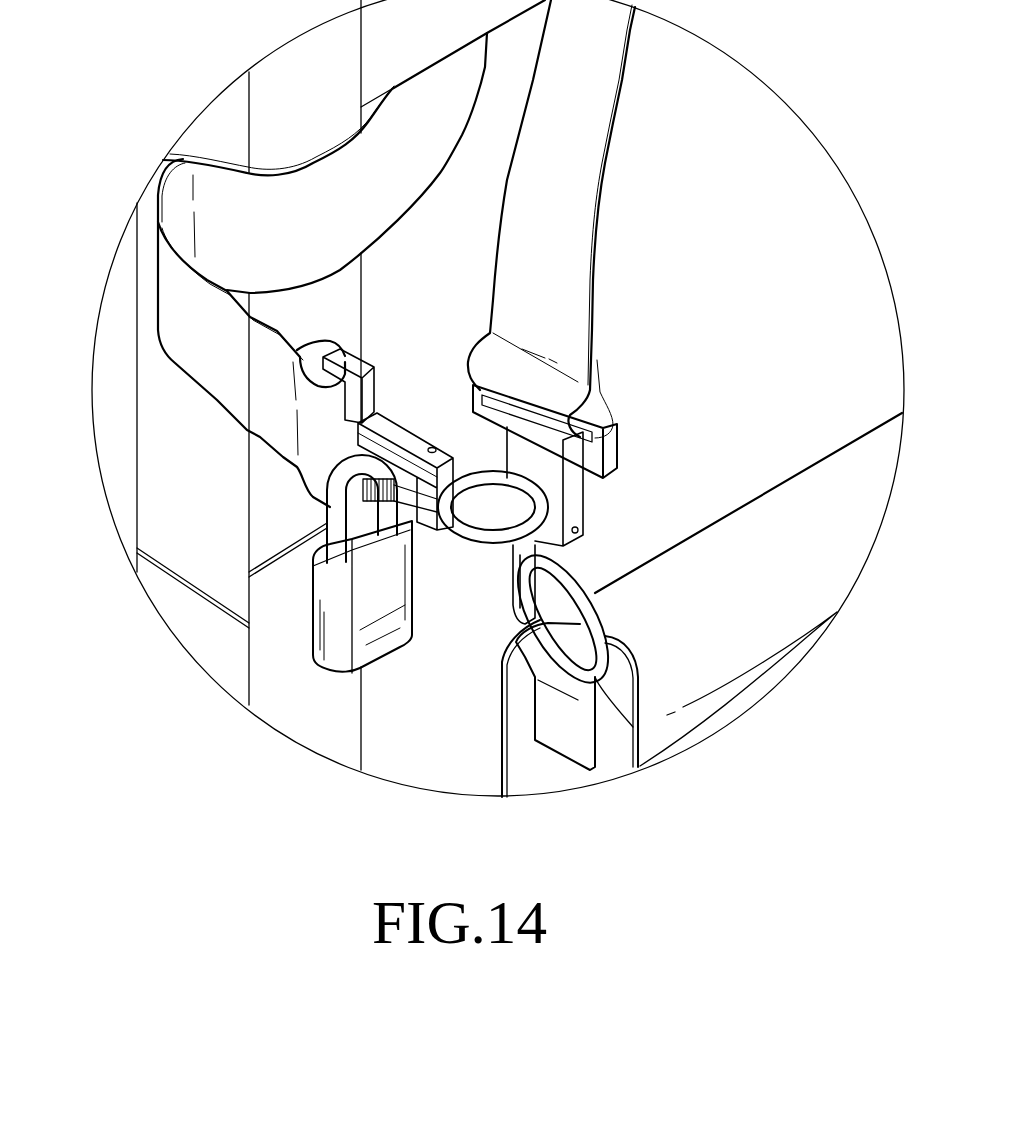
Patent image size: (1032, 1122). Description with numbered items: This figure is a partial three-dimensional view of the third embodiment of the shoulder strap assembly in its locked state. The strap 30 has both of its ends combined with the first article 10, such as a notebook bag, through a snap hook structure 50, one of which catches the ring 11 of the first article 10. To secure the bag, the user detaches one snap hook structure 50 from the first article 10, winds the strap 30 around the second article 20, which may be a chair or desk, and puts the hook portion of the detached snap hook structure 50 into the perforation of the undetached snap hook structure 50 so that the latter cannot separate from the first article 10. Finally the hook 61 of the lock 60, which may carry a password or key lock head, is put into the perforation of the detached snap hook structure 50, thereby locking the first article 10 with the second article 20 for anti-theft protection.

The first article 10 is at (772, 602).
The ring 11 is at (583, 610).
The second article 20 is at (160, 418).
The strap 30 is at (545, 202).
The snap hook structure 50 is at (592, 510).
The lock 60 is at (305, 592).
The hook 61 is at (347, 470).